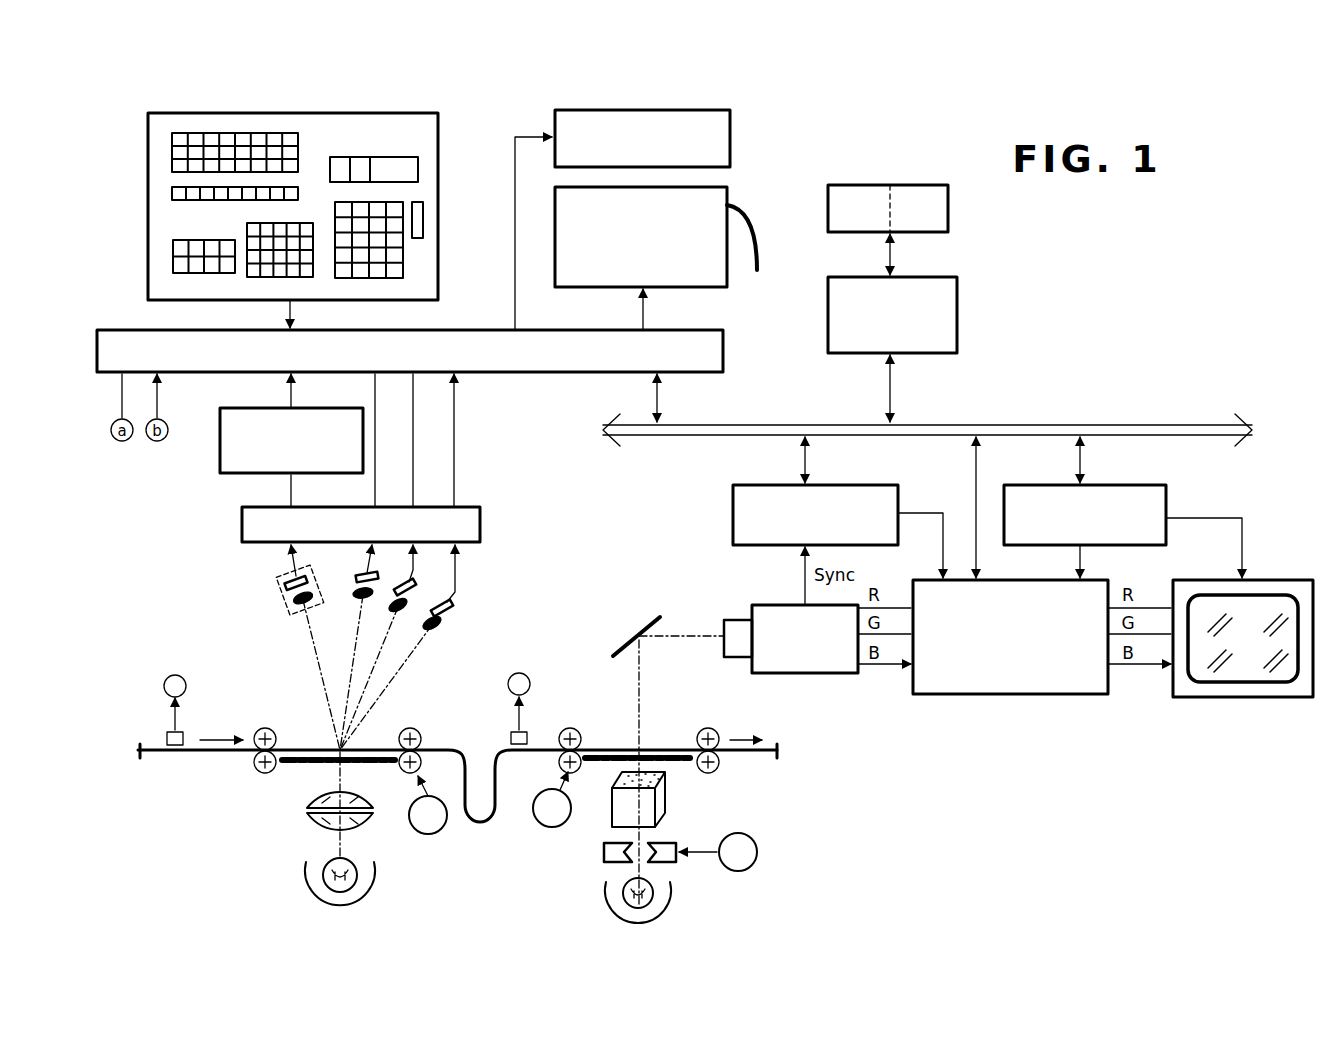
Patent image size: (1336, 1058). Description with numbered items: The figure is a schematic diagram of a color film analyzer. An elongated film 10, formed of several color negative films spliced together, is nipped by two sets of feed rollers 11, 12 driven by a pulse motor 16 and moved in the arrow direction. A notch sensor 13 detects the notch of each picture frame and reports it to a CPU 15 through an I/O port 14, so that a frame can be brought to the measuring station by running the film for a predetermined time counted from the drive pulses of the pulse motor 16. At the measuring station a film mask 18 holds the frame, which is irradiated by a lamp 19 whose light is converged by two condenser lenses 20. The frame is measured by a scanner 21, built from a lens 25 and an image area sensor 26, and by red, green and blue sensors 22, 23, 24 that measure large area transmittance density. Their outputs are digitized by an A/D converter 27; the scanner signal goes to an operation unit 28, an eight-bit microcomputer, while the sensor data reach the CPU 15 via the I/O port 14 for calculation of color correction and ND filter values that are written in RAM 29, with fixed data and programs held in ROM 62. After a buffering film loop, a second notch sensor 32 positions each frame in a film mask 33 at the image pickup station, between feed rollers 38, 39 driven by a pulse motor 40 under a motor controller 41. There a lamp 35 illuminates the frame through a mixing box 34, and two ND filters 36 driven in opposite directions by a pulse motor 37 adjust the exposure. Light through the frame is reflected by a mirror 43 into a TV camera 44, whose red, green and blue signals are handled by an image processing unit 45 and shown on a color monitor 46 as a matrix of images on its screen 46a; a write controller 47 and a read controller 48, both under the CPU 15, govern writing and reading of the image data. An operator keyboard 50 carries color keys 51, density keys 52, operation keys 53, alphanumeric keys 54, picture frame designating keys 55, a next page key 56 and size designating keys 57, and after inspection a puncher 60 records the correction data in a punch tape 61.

The elongated film 10 is at (204, 756).
The feed rollers 11 is at (265, 726).
The feed rollers 12 is at (411, 726).
The notch sensor 13 is at (185, 733).
The I/O port 14 is at (473, 328).
The CPU 15 is at (957, 315).
The pulse motor 16 is at (428, 835).
The film mask 18 is at (297, 767).
The lamp 19 is at (362, 884).
The condenser lenses 20 is at (315, 827).
The scanner 21 is at (280, 595).
The red sensor 22 is at (357, 585).
The green sensor 23 is at (412, 583).
The blue sensor 24 is at (458, 606).
The lens 25 is at (296, 607).
The image area sensor 26 is at (284, 578).
The A/D converter 27 is at (480, 522).
The operation unit 28 is at (220, 455).
The RAM 29 is at (922, 185).
The notch sensor 32 is at (511, 733).
The film mask 33 is at (697, 766).
The mixing box 34 is at (615, 813).
The lamp 35 is at (666, 896).
The ND filters 36 is at (607, 865).
The pulse motor 37 is at (752, 870).
The feed rollers 38 is at (571, 726).
The feed rollers 39 is at (708, 726).
The pulse motor 40 is at (552, 827).
The motor controller 41 is at (730, 140).
The mirror 43 is at (634, 632).
The TV camera 44 is at (800, 673).
The image processing unit 45 is at (1017, 694).
The color monitor 46 is at (1247, 697).
The screen 46a is at (1272, 610).
The write controller 47 is at (858, 485).
The read controller 48 is at (1128, 485).
The keyboard 50 is at (430, 126).
The color keys 51 is at (203, 132).
The density keys 52 is at (172, 193).
The operation keys 53 is at (173, 248).
The alphanumeric keys 54 is at (250, 277).
The picture frame designating keys 55 is at (357, 262).
The next page key 56 is at (423, 220).
The size designating keys 57 is at (366, 157).
The puncher 60 is at (727, 287).
The punch tape 61 is at (755, 218).
The ROM 62 is at (858, 185).